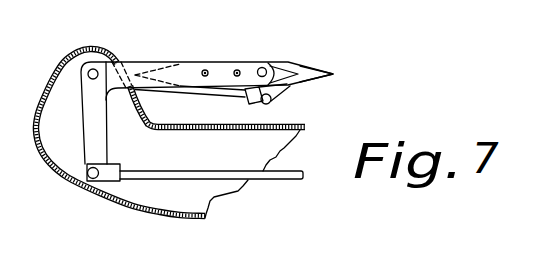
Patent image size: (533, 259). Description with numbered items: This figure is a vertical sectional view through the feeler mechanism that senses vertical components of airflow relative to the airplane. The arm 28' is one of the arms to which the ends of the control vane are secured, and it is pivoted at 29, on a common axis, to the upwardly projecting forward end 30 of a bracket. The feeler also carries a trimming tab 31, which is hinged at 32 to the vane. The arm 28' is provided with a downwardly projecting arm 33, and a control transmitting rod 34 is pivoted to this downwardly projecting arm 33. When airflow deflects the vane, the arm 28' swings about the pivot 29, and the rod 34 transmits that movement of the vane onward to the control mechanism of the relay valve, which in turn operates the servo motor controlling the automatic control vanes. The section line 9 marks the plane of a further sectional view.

The section line 9- 9 is at (106, 14).
The arm 28' is at (219, 64).
The pivot 29 is at (93, 69).
The upwardly projecting forward end 30 is at (53, 80).
The trimming tab 31 is at (333, 74).
The hinge 32 is at (262, 67).
The downwardly projecting arm 33 is at (88, 155).
The control transmitting rod 34 is at (280, 179).